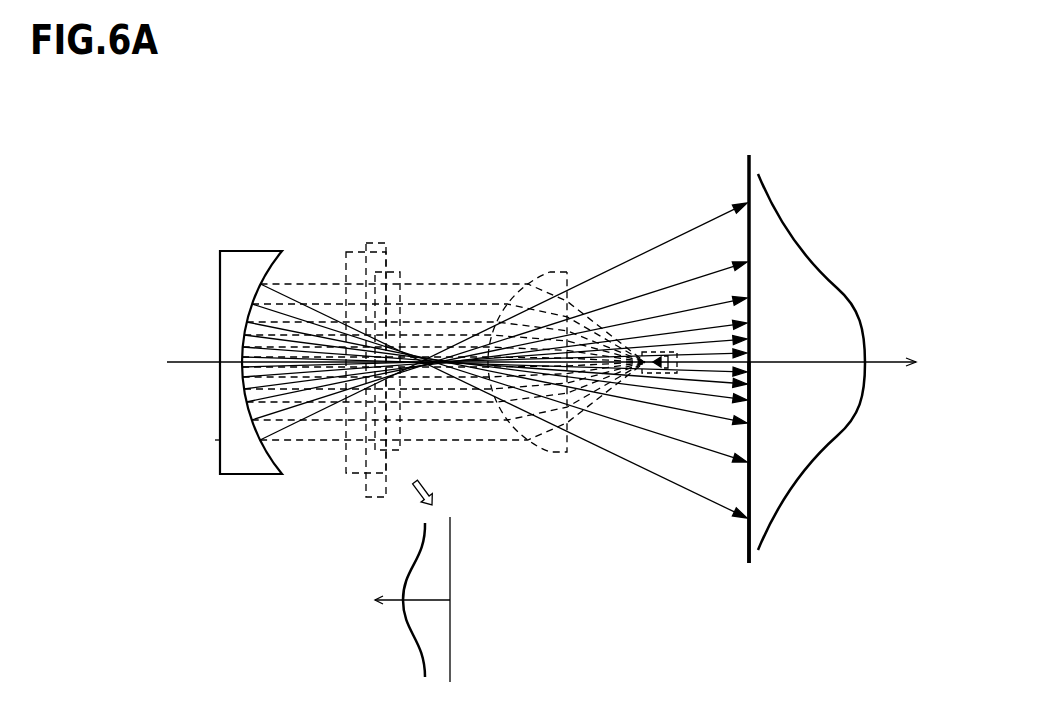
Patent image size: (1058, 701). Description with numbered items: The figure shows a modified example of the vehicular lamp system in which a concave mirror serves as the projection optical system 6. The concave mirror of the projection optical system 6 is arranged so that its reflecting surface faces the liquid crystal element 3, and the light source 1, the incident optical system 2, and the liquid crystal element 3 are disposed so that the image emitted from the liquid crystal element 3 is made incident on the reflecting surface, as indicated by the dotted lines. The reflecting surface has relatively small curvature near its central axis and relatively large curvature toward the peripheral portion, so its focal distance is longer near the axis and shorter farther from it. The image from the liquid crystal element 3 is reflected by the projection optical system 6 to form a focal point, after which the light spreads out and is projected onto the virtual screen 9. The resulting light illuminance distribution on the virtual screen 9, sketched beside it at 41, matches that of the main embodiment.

The light source 1 is at (672, 352).
The incident optical system 2 is at (548, 272).
The liquid crystal element 3 is at (365, 247).
The projection optical system 6 is at (244, 251).
The virtual screen 9 is at (747, 157).
The irradiated surface 41 is at (741, 563).